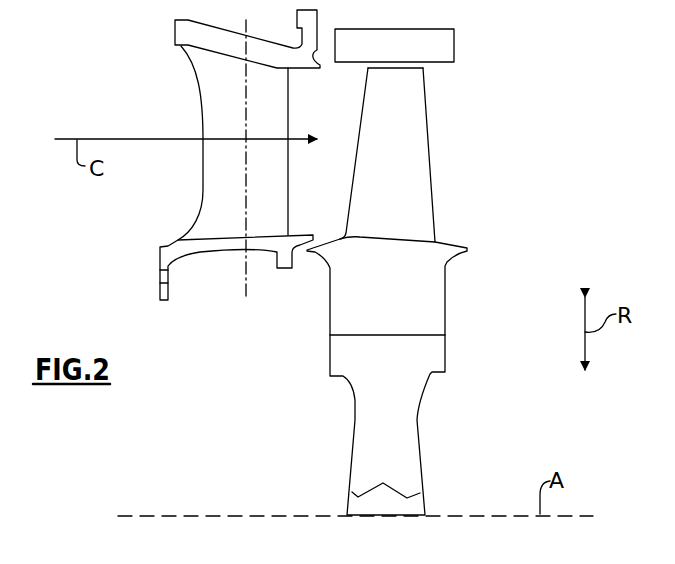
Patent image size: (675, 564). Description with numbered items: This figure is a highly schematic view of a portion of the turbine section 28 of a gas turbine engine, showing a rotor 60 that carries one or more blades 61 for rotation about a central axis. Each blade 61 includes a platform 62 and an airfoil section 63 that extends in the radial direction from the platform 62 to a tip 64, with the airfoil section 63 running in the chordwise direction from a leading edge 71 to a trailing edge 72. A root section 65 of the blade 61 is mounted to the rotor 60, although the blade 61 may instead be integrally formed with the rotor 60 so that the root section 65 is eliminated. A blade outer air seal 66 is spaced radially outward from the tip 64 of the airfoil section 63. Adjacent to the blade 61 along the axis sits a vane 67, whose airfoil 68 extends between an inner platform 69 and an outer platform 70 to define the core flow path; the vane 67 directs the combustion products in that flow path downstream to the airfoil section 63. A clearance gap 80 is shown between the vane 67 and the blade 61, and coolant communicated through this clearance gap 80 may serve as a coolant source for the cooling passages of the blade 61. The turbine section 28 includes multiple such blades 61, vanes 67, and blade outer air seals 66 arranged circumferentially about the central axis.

The turbine section 28 is at (499, 67).
The rotor 60 is at (411, 415).
The blade 61 is at (441, 161).
The platform 62 is at (320, 247).
The airfoil section 63 is at (420, 202).
The tip 64 is at (378, 68).
The root section 65 is at (447, 300).
The blade outer air seal 66 is at (455, 42).
The vane 67 is at (202, 122).
The airfoil 68 is at (225, 178).
The inner platform 69 is at (162, 247).
The outer platform 70 is at (175, 33).
The leading edge 71 is at (360, 119).
The trailing edge 72 is at (430, 110).
The clearance gap 80 is at (306, 259).